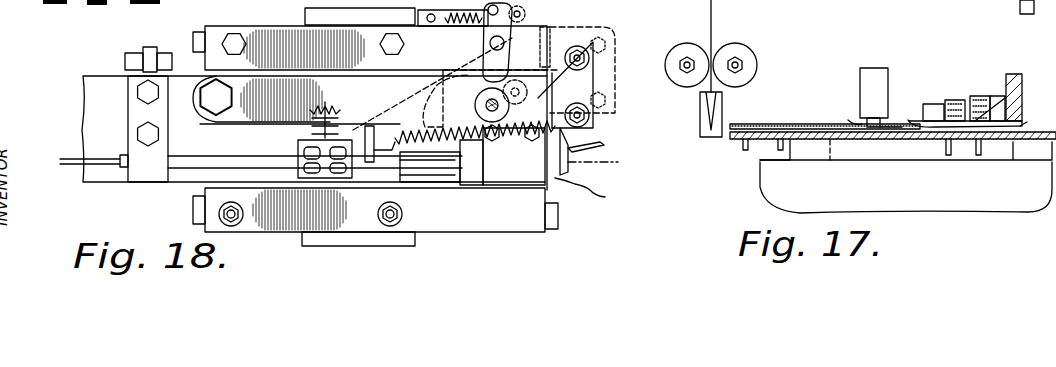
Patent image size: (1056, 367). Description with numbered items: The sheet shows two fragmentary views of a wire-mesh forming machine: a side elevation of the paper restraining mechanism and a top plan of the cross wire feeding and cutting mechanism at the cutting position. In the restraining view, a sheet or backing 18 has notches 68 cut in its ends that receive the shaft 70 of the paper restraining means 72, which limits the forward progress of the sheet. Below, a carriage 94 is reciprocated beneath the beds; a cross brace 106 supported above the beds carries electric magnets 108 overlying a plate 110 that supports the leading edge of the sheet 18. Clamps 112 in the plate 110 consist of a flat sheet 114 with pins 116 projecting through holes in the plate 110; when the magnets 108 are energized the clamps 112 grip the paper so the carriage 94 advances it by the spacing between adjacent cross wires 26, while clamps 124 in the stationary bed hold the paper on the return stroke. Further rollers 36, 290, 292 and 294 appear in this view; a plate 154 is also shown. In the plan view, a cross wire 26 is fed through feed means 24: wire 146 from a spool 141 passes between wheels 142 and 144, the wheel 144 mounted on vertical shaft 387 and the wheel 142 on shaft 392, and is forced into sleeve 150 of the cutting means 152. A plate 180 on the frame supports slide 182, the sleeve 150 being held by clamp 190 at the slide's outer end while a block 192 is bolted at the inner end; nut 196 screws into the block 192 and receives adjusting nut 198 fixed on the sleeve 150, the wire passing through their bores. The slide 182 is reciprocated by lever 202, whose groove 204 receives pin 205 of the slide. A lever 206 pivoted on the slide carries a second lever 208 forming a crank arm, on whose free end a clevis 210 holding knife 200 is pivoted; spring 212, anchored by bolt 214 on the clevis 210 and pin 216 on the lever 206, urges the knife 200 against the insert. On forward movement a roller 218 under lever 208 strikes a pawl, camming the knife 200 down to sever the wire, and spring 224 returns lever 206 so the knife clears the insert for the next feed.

In FIG. 17, the sheet or backing 18 is at (1025, 122).
In FIG. 17, the feed means 24 is at (749, 28).
In FIG. 18, the cross wire 26 is at (612, 162).
In FIG. 17, the roller 36 is at (985, 4).
In FIG. 17, the notches 68 is at (888, 124).
In FIG. 17, the shaft 70 is at (846, 112).
In FIG. 17, the paper restraining means 72 is at (901, 58).
In FIG. 17, the carriage 94 is at (1026, 200).
In FIG. 17, the cross brace 106 is at (1006, 80).
In FIG. 17, the electric magnets 108 is at (948, 100).
In FIG. 17, the plate 110 is at (1028, 126).
In FIG. 17, the clamps 112 is at (940, 150).
In FIG. 17, the flat sheet 114 is at (1012, 100).
In FIG. 17, the pins 116 is at (960, 148).
In FIG. 17, the clamps 124 is at (762, 123).
In FIG. 17, the spool 141 is at (699, 112).
In FIG. 17, the wheel 142 is at (757, 60).
In FIG. 17, the wheel 144 is at (665, 60).
In FIG. 18, the wire 146 is at (73, 160).
In FIG. 17, the wire 146 is at (710, 4).
In FIG. 18, the sleeve 150 is at (178, 170).
In FIG. 18, the cutting means 152 is at (596, 193).
In FIG. 18, the plate 154 is at (605, 25).
In FIG. 18, the plate 180 is at (82, 92).
In FIG. 18, the slide 182 is at (181, 82).
In FIG. 18, the clamp 190 is at (138, 176).
In FIG. 18, the block 192 is at (512, 205).
In FIG. 18, the nut 196 is at (466, 185).
In FIG. 18, the adjusting nut 198 is at (423, 183).
In FIG. 18, the knife 200 is at (600, 144).
In FIG. 18, the lever 202 is at (124, 60).
In FIG. 18, the groove 204 is at (150, 52).
In FIG. 18, the pin 205 is at (152, 48).
In FIG. 18, the lever 206 is at (272, 126).
In FIG. 18, the second lever 208 is at (560, 45).
In FIG. 18, the clevis 210 is at (590, 130).
In FIG. 18, the spring 212 is at (514, 155).
In FIG. 18, the bolt 214 is at (565, 85).
In FIG. 18, the pin 216 is at (369, 165).
In FIG. 18, the roller 218 is at (485, 106).
In FIG. 18, the spring 224 is at (305, 138).
In FIG. 17, the roller 290 is at (994, 29).
In FIG. 17, the roller 292 is at (1038, 18).
In FIG. 17, the roller 294 is at (1005, 0).
In FIG. 17, the vertical shaft 387 is at (688, 58).
In FIG. 17, the shaft 392 is at (738, 57).